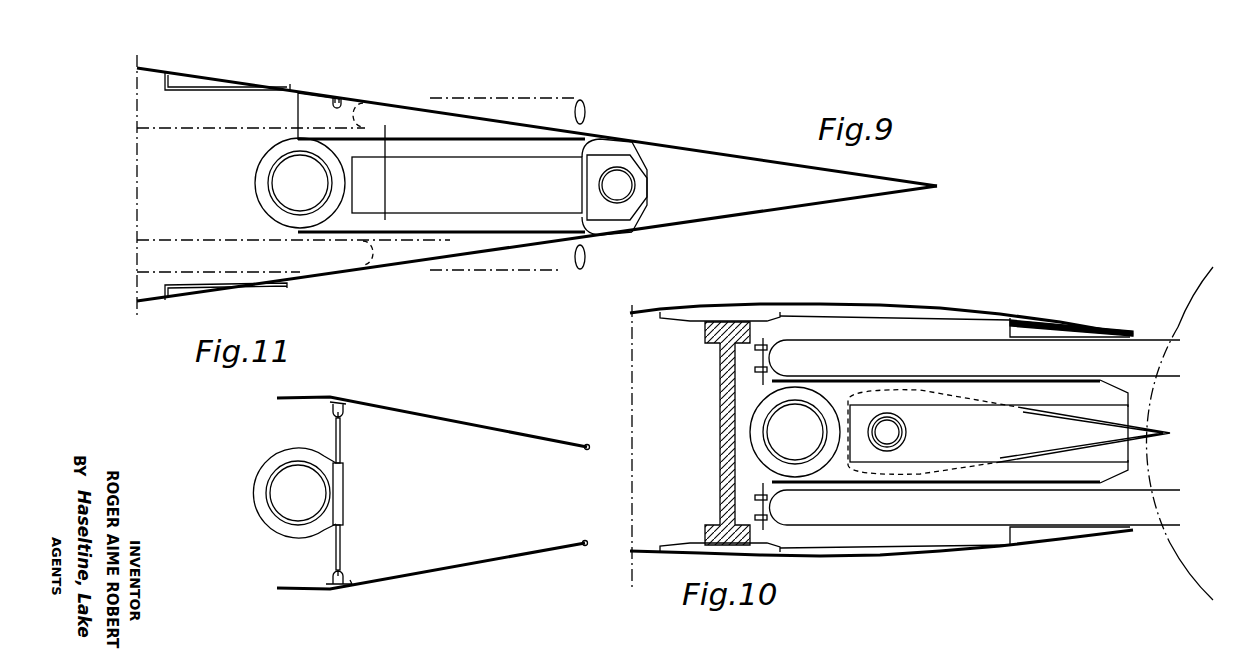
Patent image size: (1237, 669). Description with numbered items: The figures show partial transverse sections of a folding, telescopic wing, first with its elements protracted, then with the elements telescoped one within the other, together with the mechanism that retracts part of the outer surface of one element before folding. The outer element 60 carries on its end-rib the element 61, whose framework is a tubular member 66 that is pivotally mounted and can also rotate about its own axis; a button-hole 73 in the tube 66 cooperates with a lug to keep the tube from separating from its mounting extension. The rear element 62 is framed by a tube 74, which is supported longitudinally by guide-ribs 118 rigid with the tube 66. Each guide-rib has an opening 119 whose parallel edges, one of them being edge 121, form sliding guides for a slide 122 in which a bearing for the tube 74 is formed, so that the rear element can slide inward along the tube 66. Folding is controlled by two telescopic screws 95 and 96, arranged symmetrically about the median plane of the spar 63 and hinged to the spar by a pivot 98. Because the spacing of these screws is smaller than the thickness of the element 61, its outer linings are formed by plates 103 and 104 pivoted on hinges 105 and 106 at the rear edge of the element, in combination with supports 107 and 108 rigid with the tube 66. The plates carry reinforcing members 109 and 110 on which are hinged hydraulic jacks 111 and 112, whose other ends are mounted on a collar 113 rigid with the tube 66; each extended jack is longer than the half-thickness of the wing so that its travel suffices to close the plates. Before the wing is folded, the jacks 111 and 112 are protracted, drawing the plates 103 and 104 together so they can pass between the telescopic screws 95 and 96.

In FIG. 9, the element 60 is at (200, 67).
In FIG. 9, the element 61 is at (356, 109).
In FIG. 9, the rear element 62 is at (652, 165).
In FIG. 10, the rear element 62 is at (1127, 423).
In FIG. 10, the spar 63 is at (727, 484).
In FIG. 9, the tubular member 66 is at (317, 158).
In FIG. 10, the tubular member 66 is at (812, 403).
In FIG. 11, the tubular member 66 is at (280, 522).
In FIG. 10, the button-hole 73 is at (873, 447).
In FIG. 9, the tube 74 is at (635, 175).
In FIG. 9, the telescopic screw 95 is at (560, 107).
In FIG. 10, the telescopic screw 95 is at (1138, 353).
In FIG. 9, the telescopic screw 96 is at (563, 270).
In FIG. 10, the telescopic screw 96 is at (1053, 513).
In FIG. 10, the pivot 98 is at (763, 345).
In FIG. 9, the plate 103 is at (428, 92).
In FIG. 10, the plate 103 is at (925, 330).
In FIG. 11, the plate 103 is at (442, 420).
In FIG. 9, the plate 104 is at (425, 265).
In FIG. 10, the plate 104 is at (948, 487).
In FIG. 11, the plate 104 is at (440, 577).
In FIG. 9, the hinge 105 is at (590, 138).
In FIG. 10, the hinge 105 is at (1100, 380).
In FIG. 11, the hinge 105 is at (587, 447).
In FIG. 9, the hinge 106 is at (590, 235).
In FIG. 10, the hinge 106 is at (1100, 490).
In FIG. 11, the hinge 106 is at (587, 545).
In FIG. 9, the support 107 is at (478, 137).
In FIG. 10, the support 107 is at (975, 382).
In FIG. 9, the support 108 is at (475, 235).
In FIG. 10, the support 108 is at (1020, 473).
In FIG. 11, the reinforcing member 109 is at (333, 402).
In FIG. 11, the reinforcing member 110 is at (347, 584).
In FIG. 11, the hydraulic jack 111 is at (362, 440).
In FIG. 11, the hydraulic jack 112 is at (362, 547).
In FIG. 11, the collar 113 is at (280, 459).
In FIG. 9, the guide-rib 118 is at (350, 117).
In FIG. 9, the opening 119 is at (467, 185).
In FIG. 9, the parallel edge 121 is at (382, 237).
In FIG. 9, the slide 122 is at (597, 167).